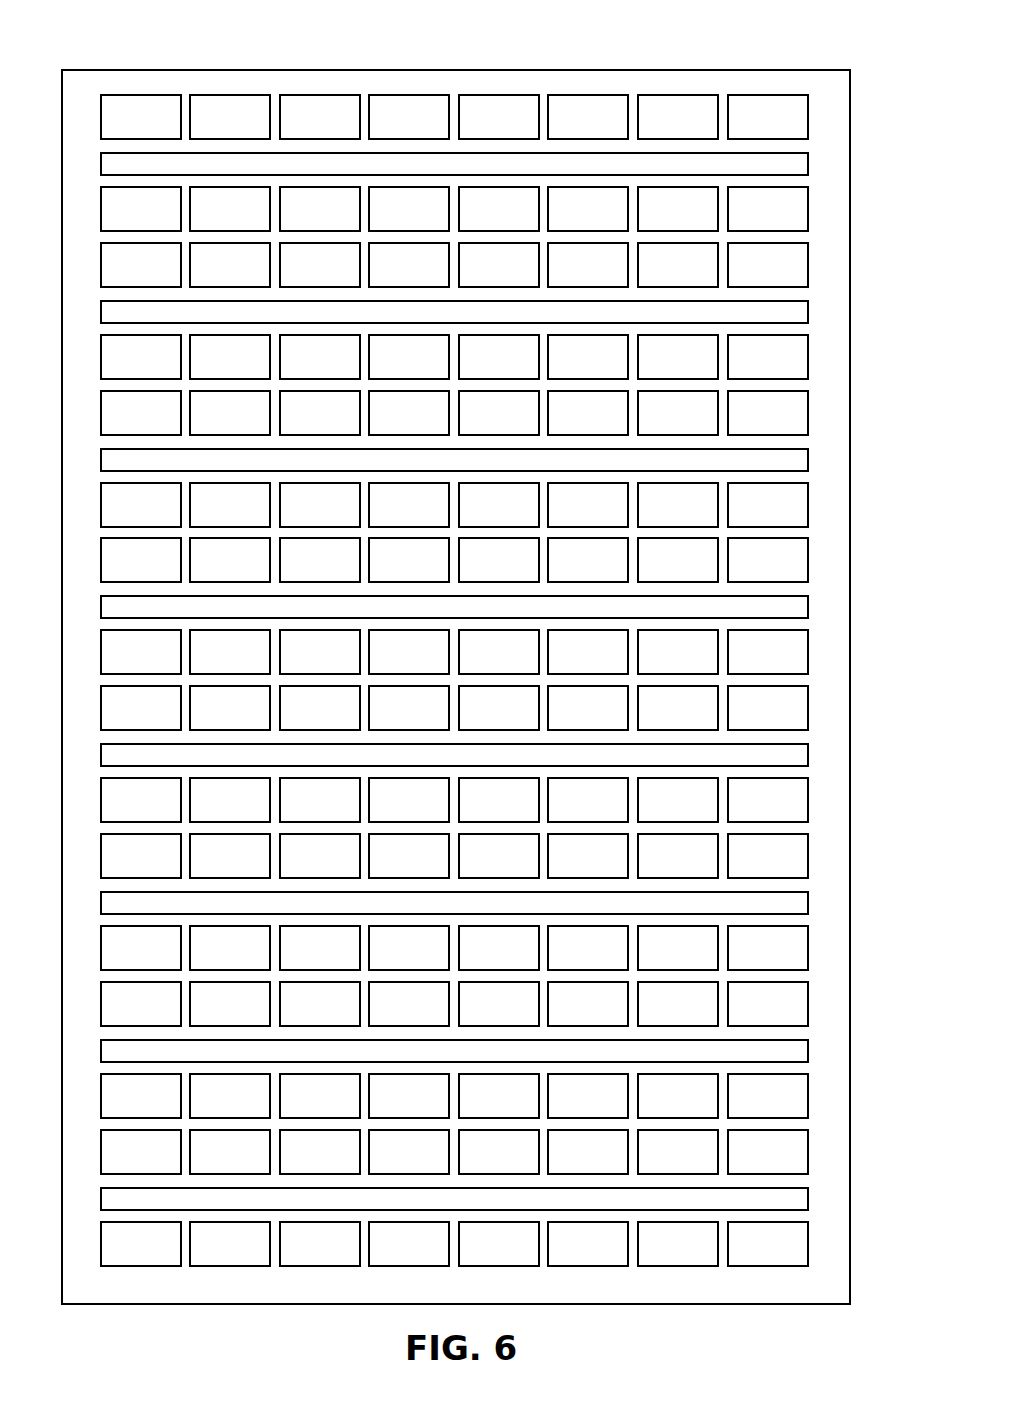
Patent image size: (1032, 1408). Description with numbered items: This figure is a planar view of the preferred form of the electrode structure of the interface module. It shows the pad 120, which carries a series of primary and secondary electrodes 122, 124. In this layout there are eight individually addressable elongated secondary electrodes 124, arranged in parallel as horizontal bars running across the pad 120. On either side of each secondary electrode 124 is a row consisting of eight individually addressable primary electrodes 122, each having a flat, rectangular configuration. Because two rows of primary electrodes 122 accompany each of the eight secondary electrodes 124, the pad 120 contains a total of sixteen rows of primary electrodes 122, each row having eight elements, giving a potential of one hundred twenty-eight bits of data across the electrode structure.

The pad 120 is at (375, 69).
The primary electrodes 122 is at (765, 92).
The secondary electrodes 124 is at (816, 172).